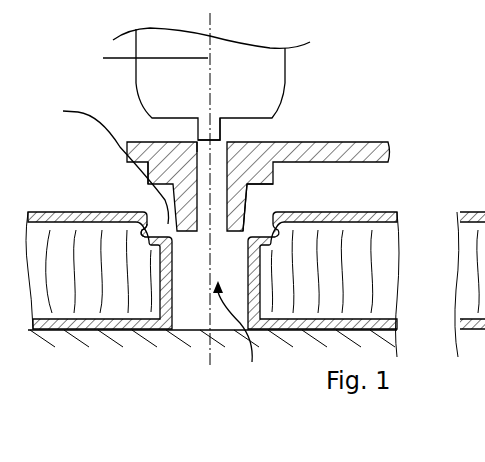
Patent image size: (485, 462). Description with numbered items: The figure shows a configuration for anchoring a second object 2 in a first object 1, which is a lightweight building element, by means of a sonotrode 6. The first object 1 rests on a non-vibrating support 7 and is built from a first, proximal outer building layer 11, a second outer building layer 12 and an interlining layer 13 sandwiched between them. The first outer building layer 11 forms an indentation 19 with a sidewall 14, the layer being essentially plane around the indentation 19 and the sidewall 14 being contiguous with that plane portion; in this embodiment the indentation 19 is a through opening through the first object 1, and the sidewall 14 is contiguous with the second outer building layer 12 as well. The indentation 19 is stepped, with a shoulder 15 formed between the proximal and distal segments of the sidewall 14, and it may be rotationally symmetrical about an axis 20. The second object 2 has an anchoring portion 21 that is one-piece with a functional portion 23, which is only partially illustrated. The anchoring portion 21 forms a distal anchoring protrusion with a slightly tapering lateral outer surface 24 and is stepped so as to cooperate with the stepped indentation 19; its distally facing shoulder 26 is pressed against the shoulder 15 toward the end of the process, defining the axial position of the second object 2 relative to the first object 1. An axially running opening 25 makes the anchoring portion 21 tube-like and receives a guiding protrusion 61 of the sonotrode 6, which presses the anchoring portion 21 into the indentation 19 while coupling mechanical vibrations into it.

The first object 1 is at (255, 284).
The second object 2 is at (251, 156).
The sonotrode 6 is at (202, 71).
The non-vibrating support 7 is at (132, 342).
The first outer building layer 11 is at (385, 218).
The second outer building layer 12 is at (380, 327).
The interlining layer 13 is at (380, 282).
The sidewall 14 is at (150, 214).
The shoulder 15 is at (148, 172).
The indentation 19 is at (239, 334).
The axis 20 is at (141, 57).
The anchoring portion 21 is at (247, 192).
The functional portion 23 is at (377, 148).
The lateral outer surface 24 is at (243, 210).
The opening 25 is at (198, 152).
The distally facing shoulder 26 is at (103, 162).
The guiding protrusion 61 is at (222, 130).